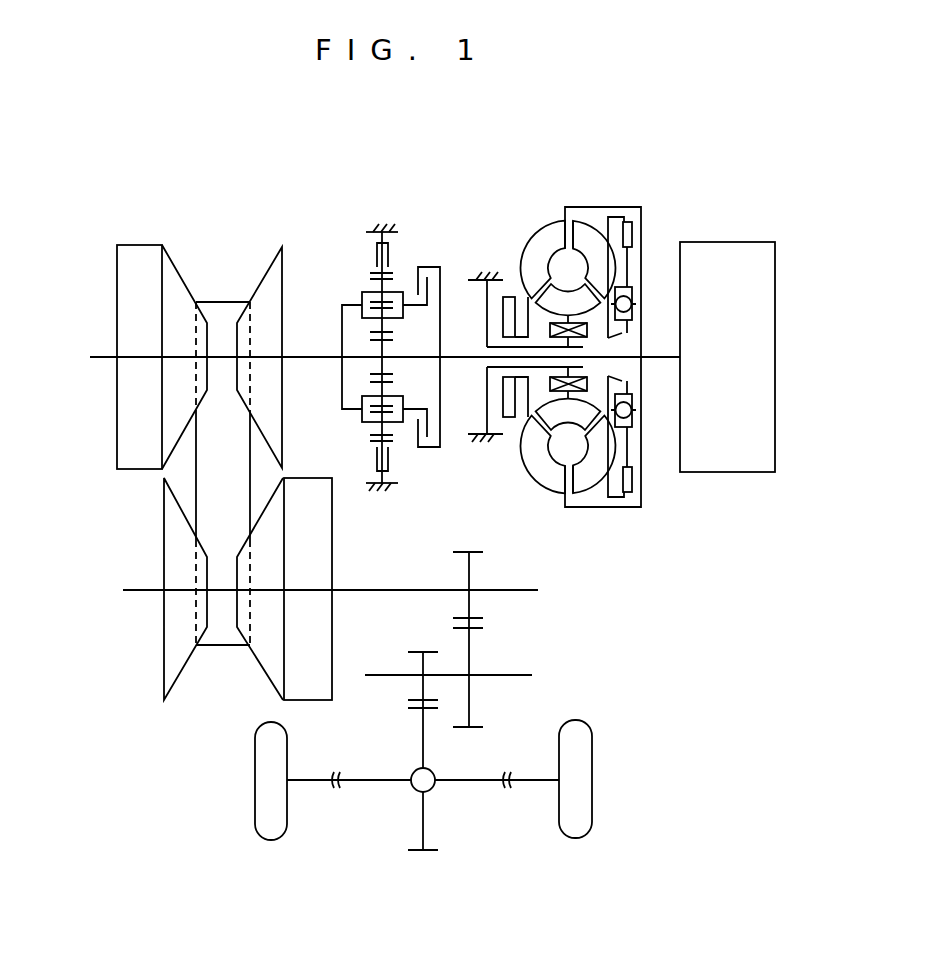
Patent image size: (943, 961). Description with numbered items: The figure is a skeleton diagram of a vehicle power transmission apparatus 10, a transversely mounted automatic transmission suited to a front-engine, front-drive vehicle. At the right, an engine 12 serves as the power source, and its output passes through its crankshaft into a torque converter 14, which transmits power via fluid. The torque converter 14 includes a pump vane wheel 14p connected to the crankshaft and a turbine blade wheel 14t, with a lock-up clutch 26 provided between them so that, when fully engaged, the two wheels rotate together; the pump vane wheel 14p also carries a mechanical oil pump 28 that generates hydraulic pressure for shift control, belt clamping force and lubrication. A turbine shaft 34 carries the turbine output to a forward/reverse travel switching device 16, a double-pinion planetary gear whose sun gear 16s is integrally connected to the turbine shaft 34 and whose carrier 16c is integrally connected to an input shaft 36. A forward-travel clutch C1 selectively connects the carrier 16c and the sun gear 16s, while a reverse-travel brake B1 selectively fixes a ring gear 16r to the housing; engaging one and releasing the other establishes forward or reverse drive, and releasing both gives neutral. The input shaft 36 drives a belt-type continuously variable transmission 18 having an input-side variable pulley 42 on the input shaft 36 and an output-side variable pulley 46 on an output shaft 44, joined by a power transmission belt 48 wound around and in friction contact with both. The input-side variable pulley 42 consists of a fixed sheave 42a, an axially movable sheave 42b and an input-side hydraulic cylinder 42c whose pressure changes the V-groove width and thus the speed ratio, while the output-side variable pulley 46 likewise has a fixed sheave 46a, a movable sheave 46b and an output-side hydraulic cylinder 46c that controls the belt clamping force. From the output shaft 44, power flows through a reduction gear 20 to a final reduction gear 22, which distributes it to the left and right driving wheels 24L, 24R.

The vehicle power transmission apparatus 10 is at (730, 183).
The engine 12 is at (763, 308).
The torque converter 14 is at (570, 187).
The pump vane wheel 14p is at (541, 467).
The turbine blade wheel 14t is at (584, 474).
The forward/reverse travel switching device 16 is at (325, 213).
The carrier 16c is at (355, 302).
The sun gear 16s is at (378, 376).
The ring gear 16r is at (370, 440).
The belt-type continuously variable transmission 18 is at (213, 698).
The reduction gear 20 is at (540, 643).
The final reduction gear 22 is at (418, 783).
The left driving wheel 24L is at (262, 805).
The right driving wheel 24R is at (578, 795).
The lock-up clutch 26 is at (630, 235).
The mechanical oil pump 28 is at (512, 308).
The turbine shaft 34 is at (455, 360).
The input shaft 36 is at (300, 355).
The input-side variable pulley 42 is at (167, 356).
The fixed sheave 42a is at (270, 282).
The movable sheave 42b is at (180, 272).
The input-side hydraulic cylinder 42c is at (130, 267).
The output shaft 44 is at (400, 592).
The output-side variable pulley 46 is at (245, 616).
The fixed sheave 46a is at (173, 647).
The movable sheave 46b is at (265, 647).
The output-side hydraulic cylinder 46c is at (337, 570).
The power transmission belt 48 is at (222, 300).
The reverse-travel brake B1 is at (366, 353).
The forward-travel clutch C1 is at (431, 341).